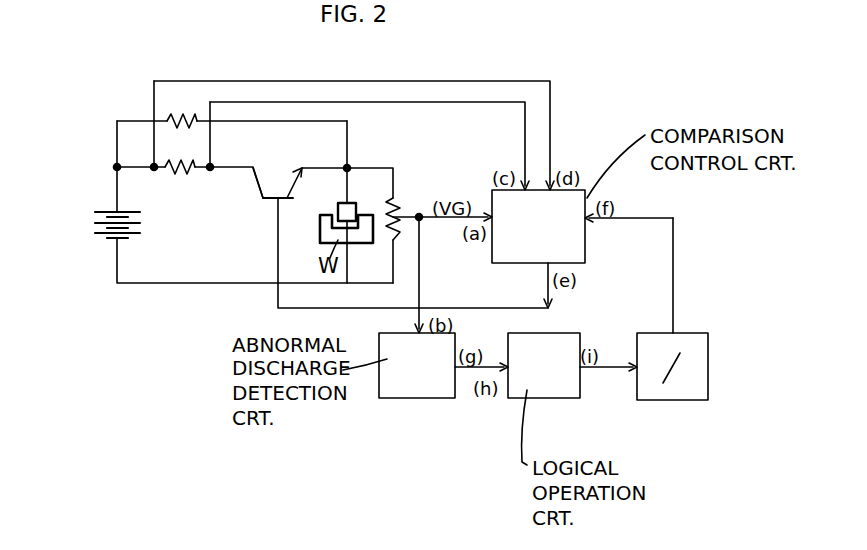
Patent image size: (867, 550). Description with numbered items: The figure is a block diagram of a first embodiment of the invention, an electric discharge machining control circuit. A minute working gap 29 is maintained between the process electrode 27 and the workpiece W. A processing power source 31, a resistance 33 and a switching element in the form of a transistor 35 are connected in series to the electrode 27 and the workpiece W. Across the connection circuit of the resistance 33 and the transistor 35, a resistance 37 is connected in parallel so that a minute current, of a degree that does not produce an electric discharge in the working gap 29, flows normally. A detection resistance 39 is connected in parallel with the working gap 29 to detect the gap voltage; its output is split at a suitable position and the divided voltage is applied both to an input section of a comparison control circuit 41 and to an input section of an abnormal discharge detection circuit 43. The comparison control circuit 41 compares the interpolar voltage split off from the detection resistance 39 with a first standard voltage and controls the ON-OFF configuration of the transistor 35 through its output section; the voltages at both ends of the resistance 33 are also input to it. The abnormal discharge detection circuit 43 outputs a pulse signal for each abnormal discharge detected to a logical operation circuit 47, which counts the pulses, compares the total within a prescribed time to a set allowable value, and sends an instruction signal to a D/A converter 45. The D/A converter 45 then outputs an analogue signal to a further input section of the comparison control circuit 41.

The process electrode 27 is at (353, 203).
The working gap 29 is at (333, 218).
The processing power source 31 is at (95, 228).
The resistance 33 is at (192, 165).
The transistor 35 is at (258, 189).
The resistance 37 is at (193, 116).
The detection resistance 39 is at (397, 207).
The comparison control circuit 41 is at (581, 203).
The abnormal discharge detection circuit 43 is at (410, 398).
The D/A converter 45 is at (680, 400).
The logical operation circuit 47 is at (545, 399).